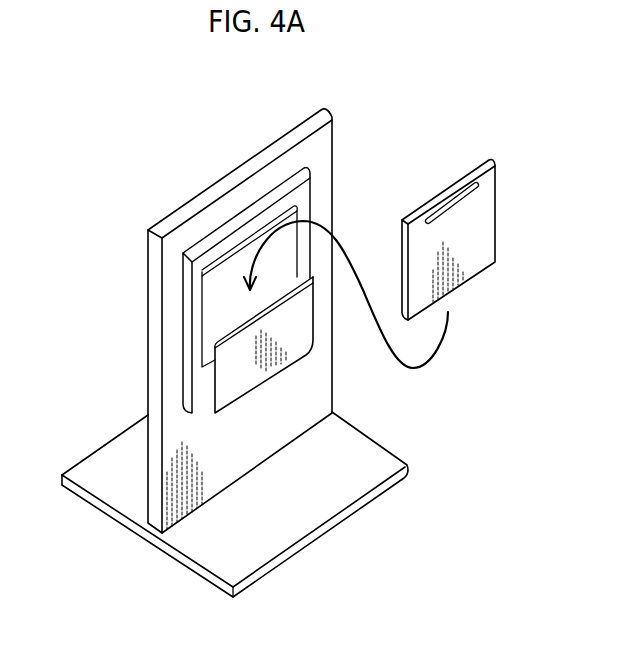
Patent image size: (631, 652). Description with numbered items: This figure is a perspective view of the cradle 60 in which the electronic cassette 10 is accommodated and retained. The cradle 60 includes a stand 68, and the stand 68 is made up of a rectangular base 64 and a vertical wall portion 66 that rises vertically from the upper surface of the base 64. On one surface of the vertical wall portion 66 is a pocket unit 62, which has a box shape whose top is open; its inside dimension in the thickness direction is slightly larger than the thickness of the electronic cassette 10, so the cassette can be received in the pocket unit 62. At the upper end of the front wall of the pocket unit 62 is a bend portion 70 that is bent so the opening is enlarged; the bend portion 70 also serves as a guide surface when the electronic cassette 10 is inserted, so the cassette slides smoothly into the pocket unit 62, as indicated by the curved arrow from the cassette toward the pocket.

The electronic cassette 10 is at (508, 181).
The cradle 60 is at (232, 319).
The pocket unit 62 is at (228, 290).
The base 64 is at (128, 440).
The vertical wall portion 66 is at (153, 377).
The stand 68 is at (212, 353).
The bend portion 70 is at (290, 302).